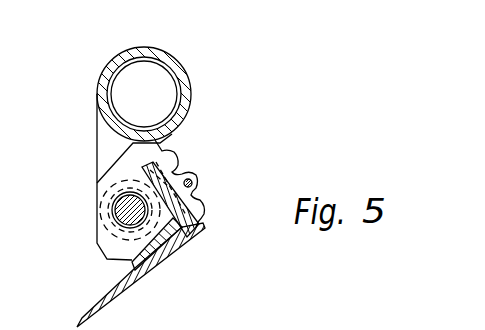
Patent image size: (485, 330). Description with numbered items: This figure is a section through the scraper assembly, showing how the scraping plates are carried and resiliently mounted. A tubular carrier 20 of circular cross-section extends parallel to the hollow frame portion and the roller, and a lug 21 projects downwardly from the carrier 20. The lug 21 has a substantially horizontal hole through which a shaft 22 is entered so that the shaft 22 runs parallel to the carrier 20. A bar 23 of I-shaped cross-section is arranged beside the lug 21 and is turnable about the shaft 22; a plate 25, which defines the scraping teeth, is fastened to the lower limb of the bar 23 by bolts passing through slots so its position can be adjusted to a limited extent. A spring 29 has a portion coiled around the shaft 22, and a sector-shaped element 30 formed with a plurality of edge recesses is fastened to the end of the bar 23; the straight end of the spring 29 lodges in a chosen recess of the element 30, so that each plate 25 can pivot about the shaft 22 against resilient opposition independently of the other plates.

The tubular carrier 20 is at (186, 73).
The lug 21 is at (97, 131).
The shaft 22 is at (115, 212).
The bar 23 is at (200, 220).
The plate 25 is at (90, 303).
The spring 29 is at (193, 182).
The sector-shaped element 30 is at (183, 151).